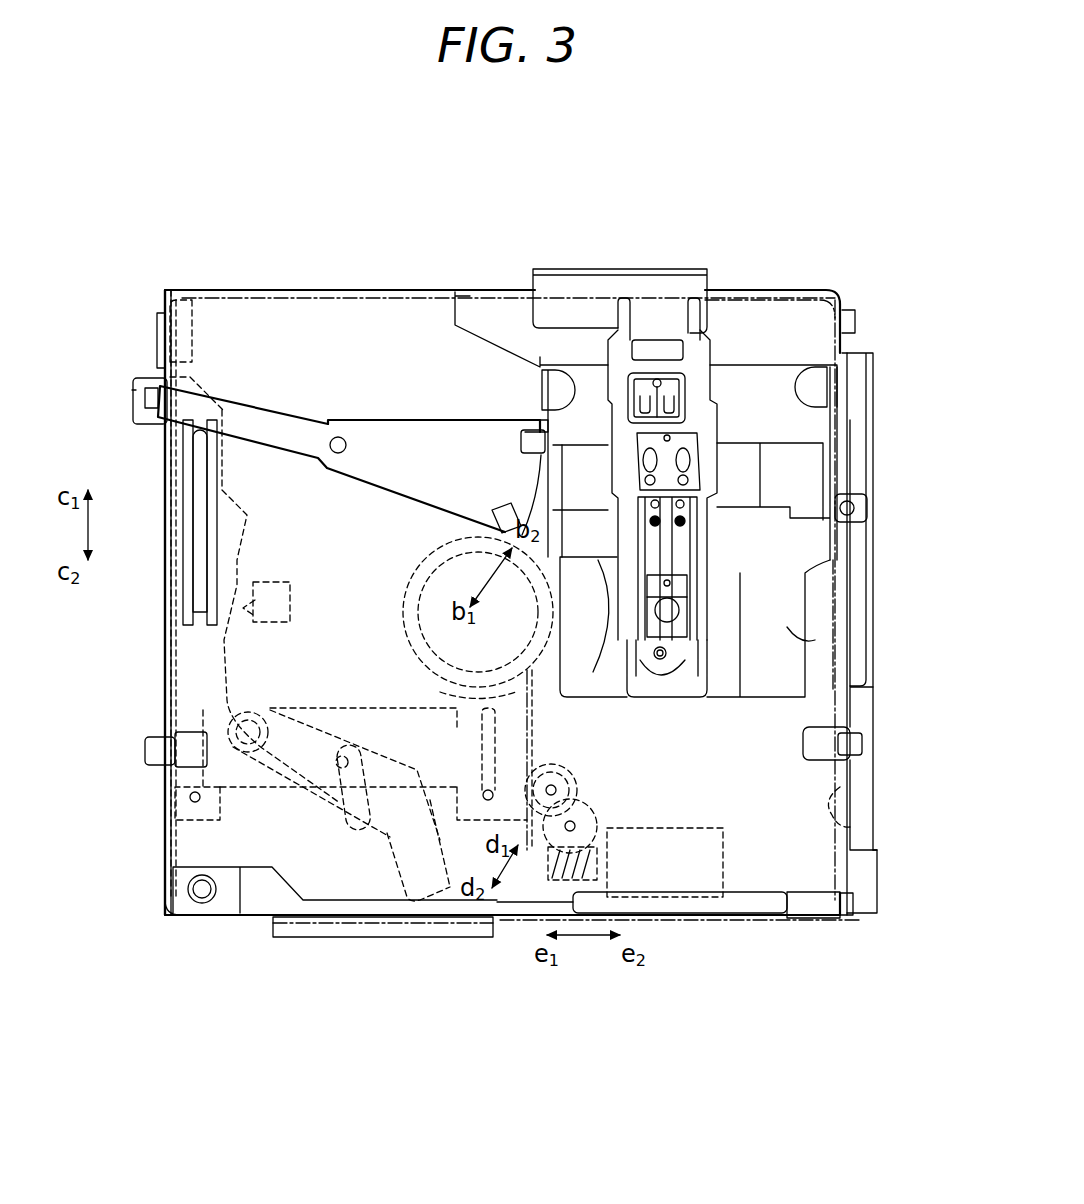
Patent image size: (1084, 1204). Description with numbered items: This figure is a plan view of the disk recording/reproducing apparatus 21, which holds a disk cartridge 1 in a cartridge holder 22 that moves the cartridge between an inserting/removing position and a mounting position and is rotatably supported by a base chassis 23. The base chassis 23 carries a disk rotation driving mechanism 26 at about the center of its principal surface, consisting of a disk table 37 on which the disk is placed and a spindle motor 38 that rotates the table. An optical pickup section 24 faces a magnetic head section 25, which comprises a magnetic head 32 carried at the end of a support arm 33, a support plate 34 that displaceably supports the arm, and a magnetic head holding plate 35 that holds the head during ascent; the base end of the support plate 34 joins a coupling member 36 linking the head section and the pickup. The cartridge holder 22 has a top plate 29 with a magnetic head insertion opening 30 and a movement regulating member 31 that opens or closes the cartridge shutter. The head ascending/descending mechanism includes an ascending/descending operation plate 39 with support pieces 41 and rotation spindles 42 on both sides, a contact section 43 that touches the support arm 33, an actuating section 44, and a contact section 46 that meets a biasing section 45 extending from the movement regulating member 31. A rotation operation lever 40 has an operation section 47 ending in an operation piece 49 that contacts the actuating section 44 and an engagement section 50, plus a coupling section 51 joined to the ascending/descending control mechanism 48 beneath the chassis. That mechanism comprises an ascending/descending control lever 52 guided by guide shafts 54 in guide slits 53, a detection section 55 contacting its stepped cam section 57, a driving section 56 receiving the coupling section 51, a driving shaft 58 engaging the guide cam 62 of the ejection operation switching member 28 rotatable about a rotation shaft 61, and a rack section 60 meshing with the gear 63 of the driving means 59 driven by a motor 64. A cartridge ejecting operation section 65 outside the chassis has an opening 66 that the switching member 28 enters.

The disk cartridge 1 is at (836, 298).
The disk recording/reproducing apparatus 21 is at (420, 212).
The cartridge holder 22 is at (180, 298).
The base chassis 23 is at (850, 395).
The optical pickup section 24 is at (748, 465).
The magnetic head section 25 is at (626, 355).
The disk rotation driving mechanism 26 is at (415, 615).
The ejection operation switching member 28 is at (432, 893).
The top plate 29 is at (812, 880).
The magnetic head insertion opening 30 is at (790, 635).
The movement regulating member 31 is at (840, 800).
The magnetic head 32 is at (690, 630).
The support arm 33 is at (688, 545).
The support plate 34 is at (572, 280).
The magnetic head holding plate 35 is at (680, 660).
The coupling member 36 is at (676, 275).
The disk table 37 is at (415, 562).
The spindle motor 38 is at (440, 546).
The ascending/descending operation plate 39 is at (790, 555).
The rotation operation lever 40 is at (276, 425).
The support pieces 41 is at (815, 420).
The rotation spindles 42 is at (538, 365).
The contact section 43 is at (582, 540).
The actuating section 44 is at (520, 420).
The ascending/descending operation plate biasing section 45 is at (866, 505).
The contact section 46 is at (852, 486).
The operation section 47 is at (425, 443).
The ascending/descending control mechanism 48 is at (128, 395).
The operation piece 49 is at (528, 443).
The engagement section 50 is at (505, 508).
The coupling section 51 is at (155, 383).
The ascending/descending control lever 52 is at (165, 640).
The guide slits 53 is at (190, 775).
The guide shafts 54 is at (195, 800).
The detection section 55 is at (275, 622).
The driving section 56 is at (150, 424).
The stepped cam section 57 is at (205, 568).
The driving shaft 58 is at (340, 772).
The driving means 59 is at (635, 805).
The rack section 60 is at (530, 720).
The rotation shaft 61 is at (248, 725).
The guide cam 62 is at (350, 810).
The gear 63 is at (540, 855).
The motor 64 is at (686, 870).
The cartridge ejecting operation section 65 is at (300, 940).
The opening 66 is at (358, 937).